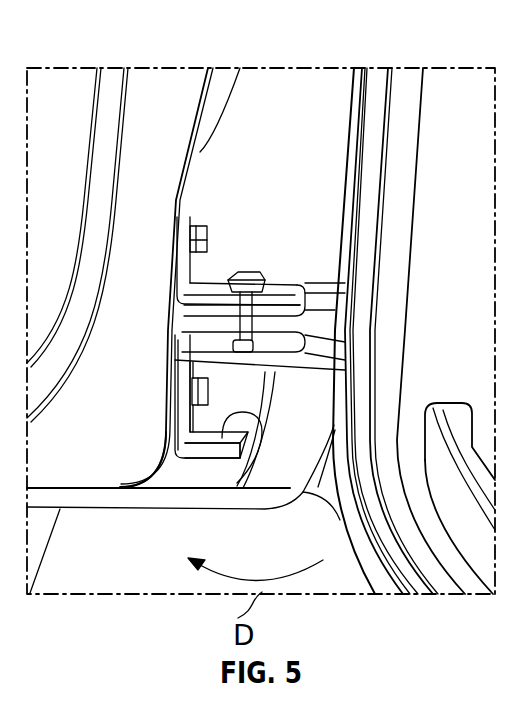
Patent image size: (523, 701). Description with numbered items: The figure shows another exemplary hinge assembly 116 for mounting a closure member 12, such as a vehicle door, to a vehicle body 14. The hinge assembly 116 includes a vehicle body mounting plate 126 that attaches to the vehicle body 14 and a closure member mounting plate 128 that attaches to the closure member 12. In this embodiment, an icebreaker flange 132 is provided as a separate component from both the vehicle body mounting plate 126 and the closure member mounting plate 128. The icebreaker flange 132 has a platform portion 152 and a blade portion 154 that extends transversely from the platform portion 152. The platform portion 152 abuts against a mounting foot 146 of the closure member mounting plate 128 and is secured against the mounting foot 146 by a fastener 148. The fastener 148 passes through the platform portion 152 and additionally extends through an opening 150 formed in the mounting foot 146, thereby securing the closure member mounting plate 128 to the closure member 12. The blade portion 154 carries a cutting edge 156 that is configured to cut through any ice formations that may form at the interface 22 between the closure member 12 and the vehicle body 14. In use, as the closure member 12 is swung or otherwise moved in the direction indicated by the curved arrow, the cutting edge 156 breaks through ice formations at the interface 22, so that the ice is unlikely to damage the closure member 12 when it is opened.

The closure member 12 is at (160, 90).
The vehicle body 14 is at (450, 85).
The hinge assembly 116 is at (270, 258).
The vehicle body mounting plate 126 is at (299, 278).
The closure member mounting plate 128 is at (212, 275).
The icebreaker flange 132 is at (160, 469).
The mounting foot 146 is at (172, 397).
The fastener 148 is at (208, 402).
The opening 150 is at (180, 388).
The platform portion 152 is at (177, 412).
The blade portion 154 is at (203, 455).
The cutting edge 156 is at (237, 483).
The interface 22 is at (308, 493).